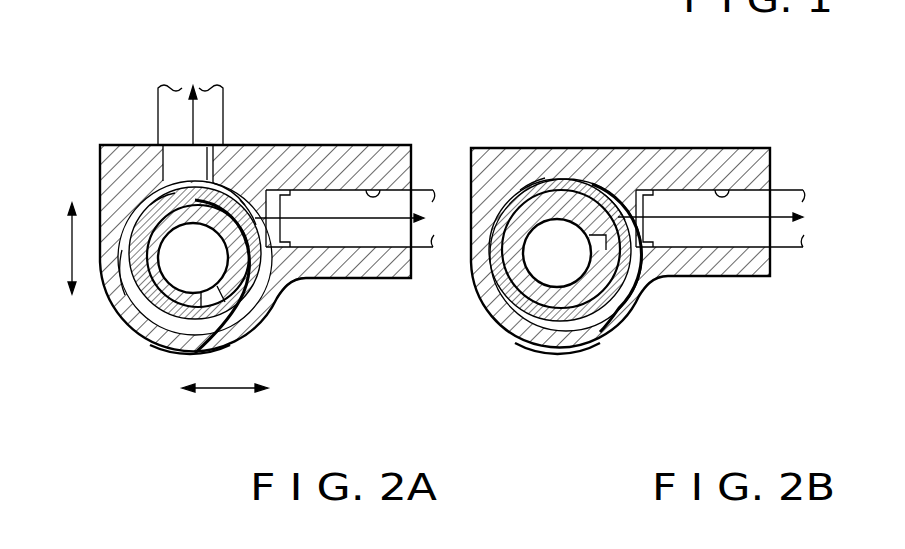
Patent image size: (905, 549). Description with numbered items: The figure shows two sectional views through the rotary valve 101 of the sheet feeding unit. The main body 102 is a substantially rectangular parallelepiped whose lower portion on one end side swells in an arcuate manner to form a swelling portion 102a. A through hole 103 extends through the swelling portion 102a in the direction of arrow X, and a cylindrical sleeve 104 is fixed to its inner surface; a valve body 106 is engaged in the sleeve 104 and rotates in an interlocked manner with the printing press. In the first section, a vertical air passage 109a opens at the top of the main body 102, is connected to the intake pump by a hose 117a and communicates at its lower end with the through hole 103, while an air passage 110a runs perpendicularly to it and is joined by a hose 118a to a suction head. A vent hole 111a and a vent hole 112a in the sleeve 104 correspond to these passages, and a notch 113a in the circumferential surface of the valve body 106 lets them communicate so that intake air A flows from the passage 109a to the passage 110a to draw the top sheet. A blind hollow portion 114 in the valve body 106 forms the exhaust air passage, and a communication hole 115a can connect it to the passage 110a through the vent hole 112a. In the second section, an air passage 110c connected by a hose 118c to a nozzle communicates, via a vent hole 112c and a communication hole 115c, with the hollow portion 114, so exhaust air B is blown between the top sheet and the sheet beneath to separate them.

In FIG. 2A, the rotary damper / hinge assembly 101 is at (349, 78).
In FIG. 2B, the rotary damper / hinge assembly 101 is at (566, 104).
In FIG. 2A, the main body 102 is at (402, 145).
In FIG. 2B, the main body 102 is at (757, 148).
In FIG. 2A, the swelling portion 102a is at (183, 357).
In FIG. 2B, the swelling portion 102a is at (521, 352).
In FIG. 2A, the through hole 103 is at (148, 212).
In FIG. 2B, the through hole 103 is at (506, 305).
In FIG. 2A, the sleeve 104 is at (130, 275).
In FIG. 2B, the sleeve 104 is at (538, 182).
In FIG. 2A, the valve body 106 is at (160, 312).
In FIG. 2B, the valve body 106 is at (570, 312).
In FIG. 2A, the air passage 109a is at (207, 170).
In FIG. 2A, the air passage 110a is at (378, 190).
In FIG. 2B, the air passage 110c is at (728, 190).
In FIG. 2A, the vent hole 111a is at (140, 180).
In FIG. 2A, the vent hole 112a is at (250, 170).
In FIG. 2B, the vent hole 112c is at (618, 212).
In FIG. 2A, the notch 113a is at (280, 275).
In FIG. 2A, the hollow portion 114 is at (187, 275).
In FIG. 2B, the hollow portion 114 is at (542, 300).
In FIG. 2A, the communication hole 115a is at (243, 336).
In FIG. 2B, the communication hole 115c is at (633, 310).
In FIG. 2A, the hose 117a is at (228, 180).
In FIG. 2A, the hose 118a is at (431, 250).
In FIG. 2B, the hose 118c is at (788, 248).